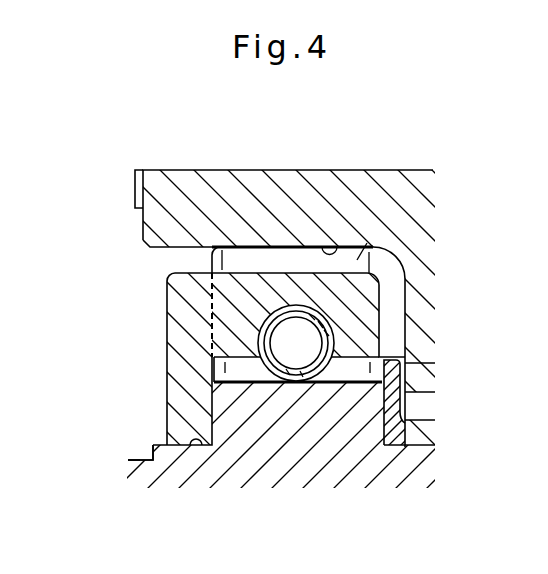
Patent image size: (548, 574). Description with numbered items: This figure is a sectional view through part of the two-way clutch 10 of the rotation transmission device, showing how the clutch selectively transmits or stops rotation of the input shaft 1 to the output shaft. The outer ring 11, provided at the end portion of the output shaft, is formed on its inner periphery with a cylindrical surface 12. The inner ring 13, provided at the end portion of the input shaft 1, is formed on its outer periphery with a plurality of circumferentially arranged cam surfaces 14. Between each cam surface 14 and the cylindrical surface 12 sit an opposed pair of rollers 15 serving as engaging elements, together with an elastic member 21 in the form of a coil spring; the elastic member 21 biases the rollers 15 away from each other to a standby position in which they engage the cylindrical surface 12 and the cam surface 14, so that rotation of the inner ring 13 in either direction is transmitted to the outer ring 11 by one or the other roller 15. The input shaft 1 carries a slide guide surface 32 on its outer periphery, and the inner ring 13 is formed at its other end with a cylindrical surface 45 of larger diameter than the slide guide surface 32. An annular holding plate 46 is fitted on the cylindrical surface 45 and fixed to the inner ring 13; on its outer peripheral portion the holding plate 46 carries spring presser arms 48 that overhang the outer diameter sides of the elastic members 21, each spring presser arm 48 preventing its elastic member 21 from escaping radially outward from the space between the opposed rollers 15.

The input shaft 1 is at (147, 470).
The two-way clutch 10 is at (213, 170).
The outer ring 11 is at (265, 180).
The cylindrical surface 12 is at (337, 245).
The inner ring 13 is at (328, 478).
The cam surface 14 is at (355, 385).
The roller 15 is at (387, 200).
The elastic member 21 is at (277, 375).
The slide guide surface 32 is at (140, 459).
The cylindrical surface 45 is at (197, 442).
The holding plate 46 is at (178, 372).
The spring presser arm 48 is at (262, 295).